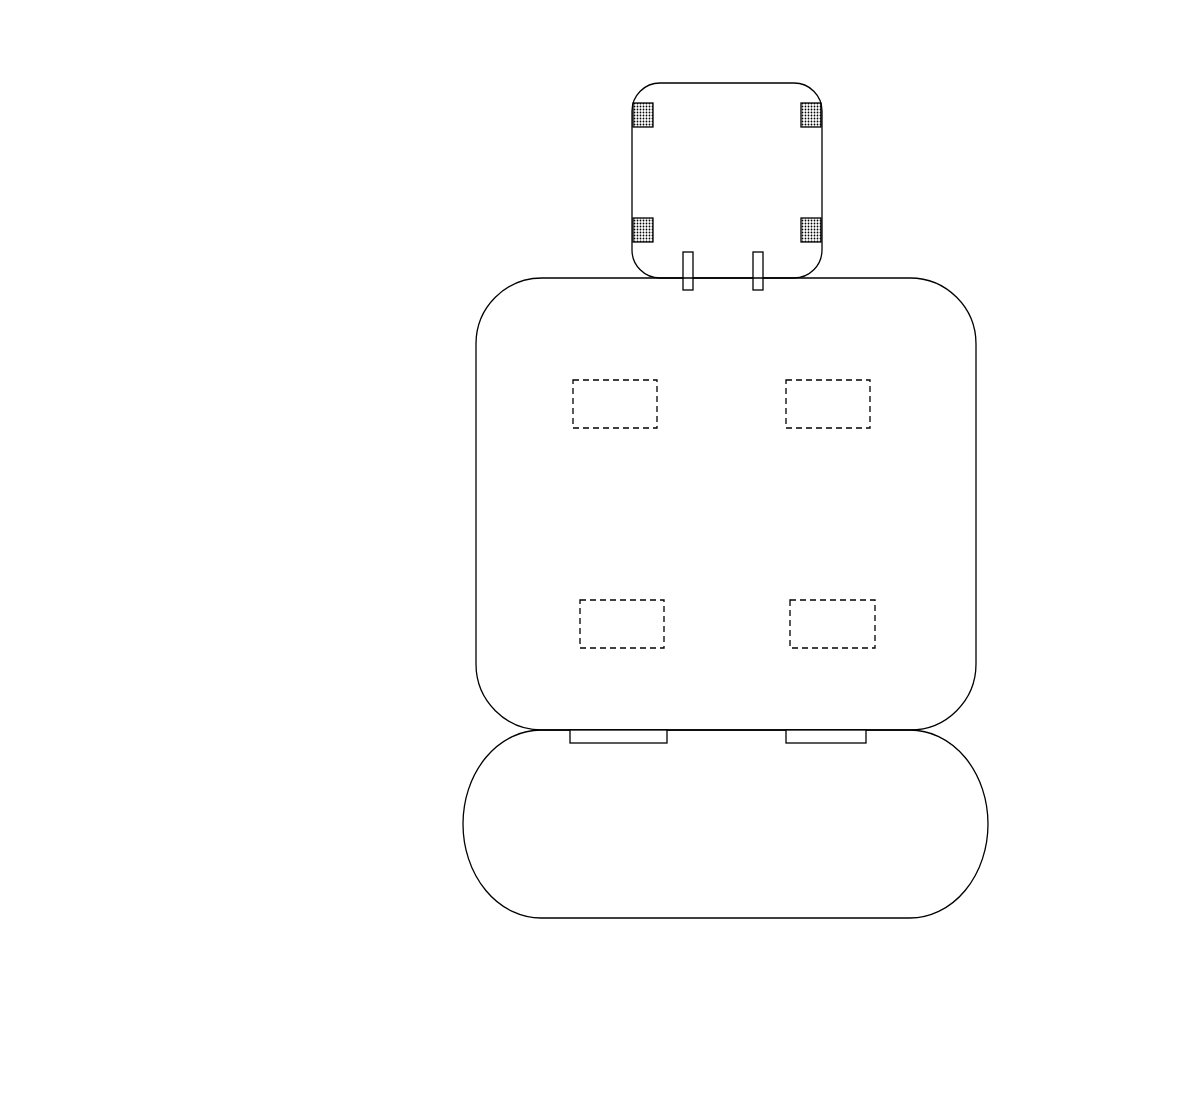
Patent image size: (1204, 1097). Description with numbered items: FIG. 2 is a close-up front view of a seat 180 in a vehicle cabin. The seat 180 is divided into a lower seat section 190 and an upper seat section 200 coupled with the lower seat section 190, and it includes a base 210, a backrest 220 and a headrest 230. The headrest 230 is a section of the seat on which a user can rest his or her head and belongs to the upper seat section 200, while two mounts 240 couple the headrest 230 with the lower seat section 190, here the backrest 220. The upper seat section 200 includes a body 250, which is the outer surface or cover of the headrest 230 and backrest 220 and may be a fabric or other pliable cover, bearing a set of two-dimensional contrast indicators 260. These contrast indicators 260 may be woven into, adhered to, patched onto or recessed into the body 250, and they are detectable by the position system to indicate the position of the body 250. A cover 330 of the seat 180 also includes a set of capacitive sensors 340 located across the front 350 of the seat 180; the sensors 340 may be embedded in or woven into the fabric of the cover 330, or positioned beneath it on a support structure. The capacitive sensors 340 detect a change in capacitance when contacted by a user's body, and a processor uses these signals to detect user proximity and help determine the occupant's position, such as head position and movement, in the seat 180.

The seat 180 is at (1083, 145).
The lower seat section 190 is at (450, 752).
The upper seat section 200 is at (452, 248).
The base 210 is at (433, 835).
The backrest 220 is at (418, 523).
The headrest 230 is at (560, 187).
The mount 240 is at (693, 298).
The body 250 is at (747, 192).
The two-dimensional contrast indicators 260 is at (628, 116).
The cover 330 is at (822, 138).
The capacitive sensors 340 is at (635, 416).
The front 350 is at (1001, 631).